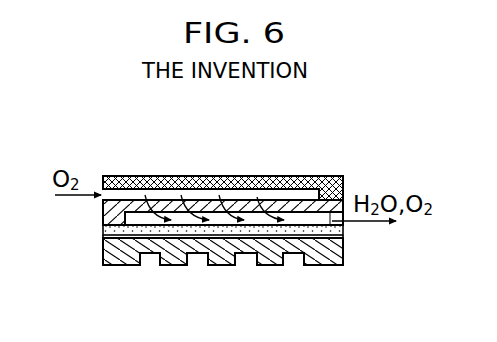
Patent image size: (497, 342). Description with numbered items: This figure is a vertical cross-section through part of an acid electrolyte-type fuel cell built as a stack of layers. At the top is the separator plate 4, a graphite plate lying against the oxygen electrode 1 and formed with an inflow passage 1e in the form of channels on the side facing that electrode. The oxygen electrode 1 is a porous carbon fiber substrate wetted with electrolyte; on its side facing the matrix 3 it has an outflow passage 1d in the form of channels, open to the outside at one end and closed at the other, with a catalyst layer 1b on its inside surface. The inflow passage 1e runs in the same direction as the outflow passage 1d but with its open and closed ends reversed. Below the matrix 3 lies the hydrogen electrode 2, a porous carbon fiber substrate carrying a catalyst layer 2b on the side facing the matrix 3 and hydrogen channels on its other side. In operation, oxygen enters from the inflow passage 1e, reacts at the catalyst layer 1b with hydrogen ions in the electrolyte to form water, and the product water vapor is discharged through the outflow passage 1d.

The oxygen electrode 1 is at (102, 207).
The catalyst layer 1b is at (102, 222).
The outflow passage 1d is at (333, 222).
The inflow passage 1e is at (175, 190).
The hydrogen electrode 2 is at (113, 266).
The catalyst layer 2b is at (102, 241).
The matrix 3 is at (102, 232).
The separator plate 4 is at (135, 176).